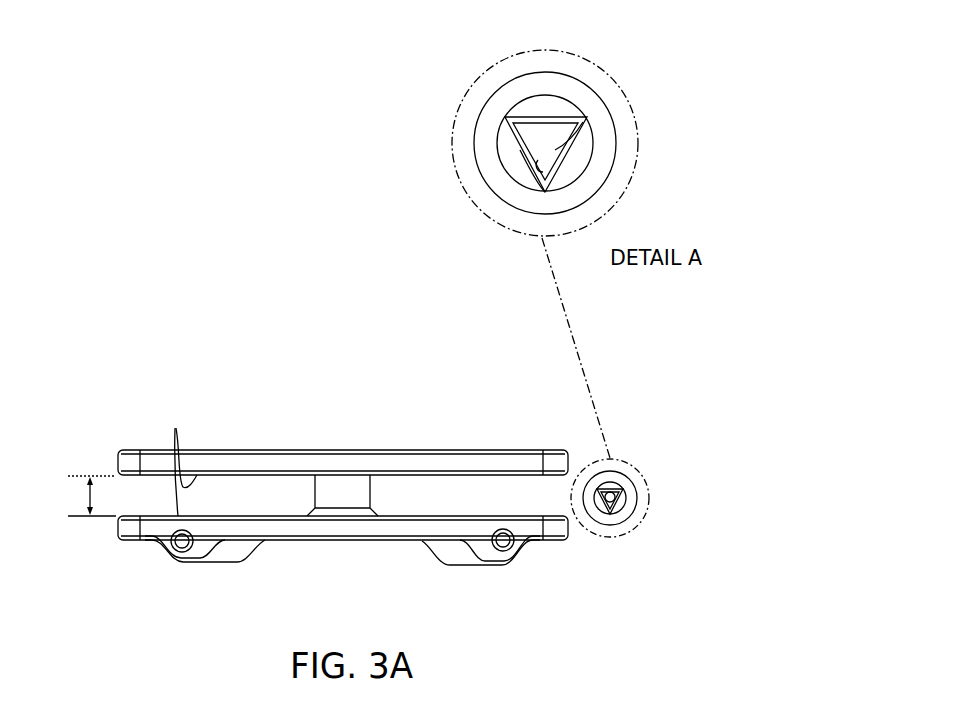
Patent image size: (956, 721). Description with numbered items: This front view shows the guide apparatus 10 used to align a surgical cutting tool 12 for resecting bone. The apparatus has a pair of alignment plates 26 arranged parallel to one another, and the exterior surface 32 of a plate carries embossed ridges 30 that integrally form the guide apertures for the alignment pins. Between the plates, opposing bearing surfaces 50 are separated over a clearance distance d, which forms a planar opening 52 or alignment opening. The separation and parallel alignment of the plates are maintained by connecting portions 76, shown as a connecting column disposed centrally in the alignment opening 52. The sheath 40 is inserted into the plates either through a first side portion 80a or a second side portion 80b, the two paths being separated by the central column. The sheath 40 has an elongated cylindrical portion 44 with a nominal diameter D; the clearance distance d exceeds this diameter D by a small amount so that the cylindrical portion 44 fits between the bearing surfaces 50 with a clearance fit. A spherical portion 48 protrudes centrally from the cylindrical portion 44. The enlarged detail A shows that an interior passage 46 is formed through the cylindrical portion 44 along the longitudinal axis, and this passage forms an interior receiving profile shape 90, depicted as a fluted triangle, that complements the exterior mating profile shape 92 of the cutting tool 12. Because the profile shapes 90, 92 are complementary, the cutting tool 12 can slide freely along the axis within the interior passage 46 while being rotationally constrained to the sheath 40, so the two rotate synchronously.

The guide apparatus 10 is at (261, 372).
The surgical cutting tool 12 is at (550, 135).
The alignment plates 26 is at (150, 460).
The embossed ridges 30 is at (220, 555).
The exterior surface 32 is at (452, 446).
The sheath 40 is at (602, 100).
The cylindrical portion 44 is at (505, 147).
The interior passage 46 is at (602, 508).
The spherical portion 48 is at (498, 102).
The bearing surfaces 50 is at (179, 457).
The planar opening 52 is at (136, 510).
The connecting portions 76 is at (349, 487).
The first side portion 80a is at (70, 523).
The second side portion 80b is at (575, 470).
The receiving profile shape 90 is at (578, 145).
The mating profile shape 92 is at (527, 185).
The nominal diameter D is at (585, 175).
The detail A is at (650, 498).
The clearance distance d is at (91, 496).